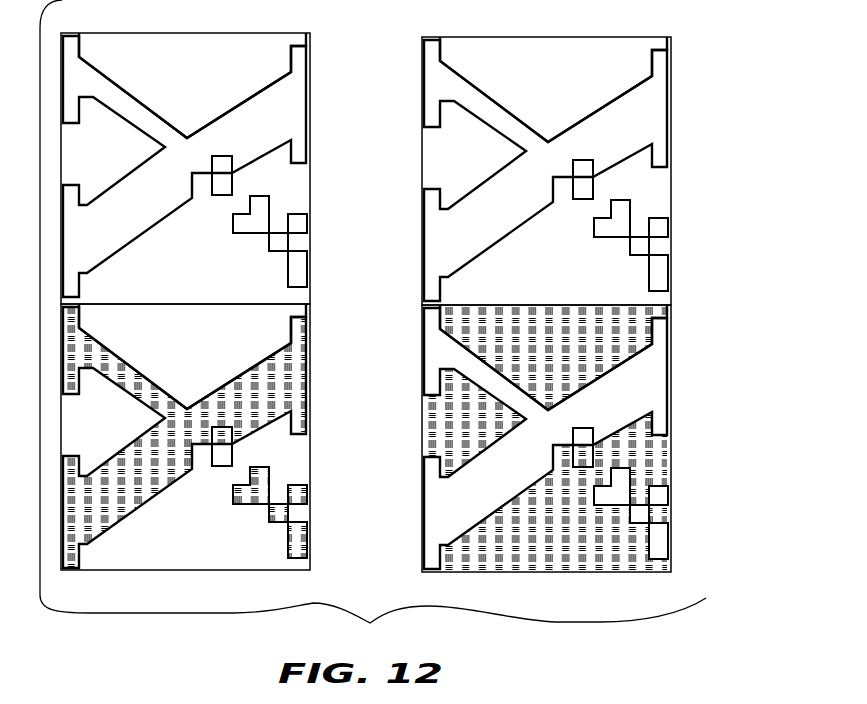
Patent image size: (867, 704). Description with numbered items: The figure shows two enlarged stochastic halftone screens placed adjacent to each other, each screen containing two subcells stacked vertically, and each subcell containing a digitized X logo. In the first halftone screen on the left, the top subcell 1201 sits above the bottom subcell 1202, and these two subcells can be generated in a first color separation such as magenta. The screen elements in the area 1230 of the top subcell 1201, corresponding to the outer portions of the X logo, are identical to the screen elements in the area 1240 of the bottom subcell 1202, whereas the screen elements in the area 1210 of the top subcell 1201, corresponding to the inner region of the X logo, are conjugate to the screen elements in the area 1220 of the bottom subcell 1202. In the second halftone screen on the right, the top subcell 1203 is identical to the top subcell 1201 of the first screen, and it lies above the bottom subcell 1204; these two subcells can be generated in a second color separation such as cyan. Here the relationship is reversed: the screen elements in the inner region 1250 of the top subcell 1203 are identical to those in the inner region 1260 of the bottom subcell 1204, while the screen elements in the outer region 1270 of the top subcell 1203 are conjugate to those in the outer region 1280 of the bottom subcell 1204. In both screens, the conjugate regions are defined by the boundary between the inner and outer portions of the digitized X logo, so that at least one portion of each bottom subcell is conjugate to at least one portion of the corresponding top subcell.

The top subcell 1201 is at (221, 154).
The bottom subcell 1202 is at (225, 437).
The top subcell 1203 is at (582, 155).
The bottom subcell 1204 is at (587, 438).
The area 1210 is at (252, 145).
The area 1220 is at (253, 413).
The area 1230 is at (213, 57).
The area 1240 is at (247, 328).
The region 1250 is at (613, 147).
The region 1260 is at (635, 405).
The region 1270 is at (590, 60).
The region 1280 is at (613, 328).